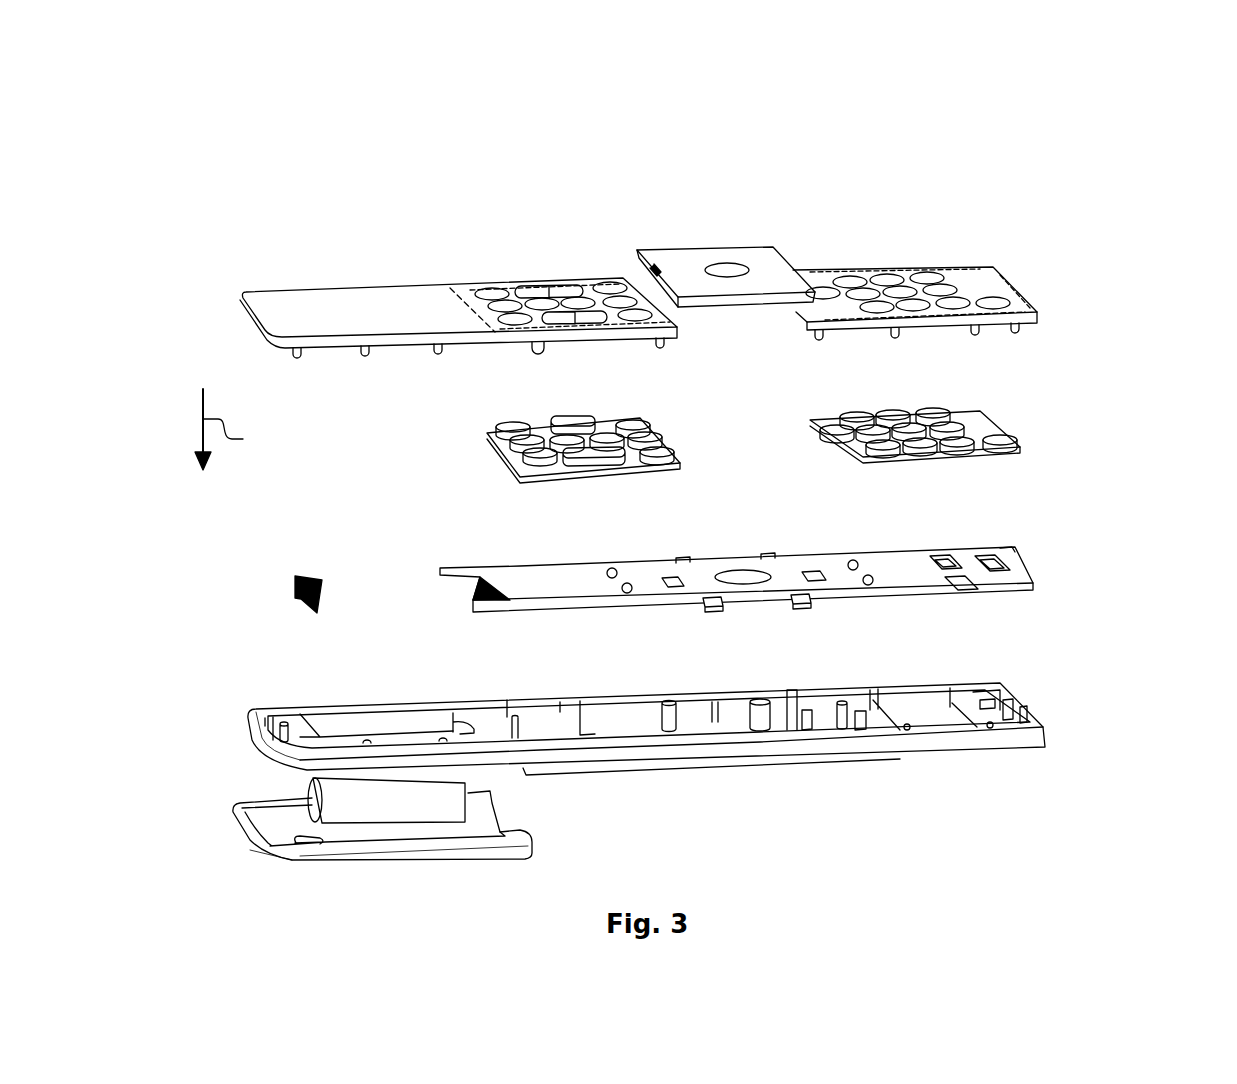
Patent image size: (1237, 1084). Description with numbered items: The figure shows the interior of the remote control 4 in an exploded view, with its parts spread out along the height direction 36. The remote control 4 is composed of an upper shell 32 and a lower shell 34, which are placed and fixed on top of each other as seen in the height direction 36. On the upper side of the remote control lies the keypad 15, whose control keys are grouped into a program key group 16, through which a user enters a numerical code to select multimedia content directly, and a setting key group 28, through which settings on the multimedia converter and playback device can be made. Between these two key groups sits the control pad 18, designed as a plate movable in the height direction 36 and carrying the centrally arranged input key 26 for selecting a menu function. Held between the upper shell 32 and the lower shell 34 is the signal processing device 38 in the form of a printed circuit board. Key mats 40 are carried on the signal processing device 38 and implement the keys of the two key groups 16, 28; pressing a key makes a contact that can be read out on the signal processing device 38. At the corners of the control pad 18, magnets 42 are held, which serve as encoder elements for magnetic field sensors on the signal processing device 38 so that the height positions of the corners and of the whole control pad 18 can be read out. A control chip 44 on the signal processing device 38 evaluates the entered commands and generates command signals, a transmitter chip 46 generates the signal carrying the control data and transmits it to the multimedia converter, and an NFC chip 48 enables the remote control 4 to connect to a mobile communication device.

The remote control 4 is at (1062, 140).
The keypad 15 is at (814, 128).
The program key group 16 is at (968, 268).
The control pad 18 is at (682, 260).
The input key 26 is at (728, 267).
The setting key group 28 is at (450, 290).
The upper shell 32 is at (1120, 259).
The lower shell 34 is at (1120, 662).
The height direction 36 is at (239, 429).
The signal processing device 38 is at (1120, 540).
The key mats 40 is at (684, 405).
The magnets 42 is at (683, 560).
The control chip 44 is at (942, 558).
The transmitter chip 46 is at (990, 560).
The NFC chip 48 is at (962, 590).